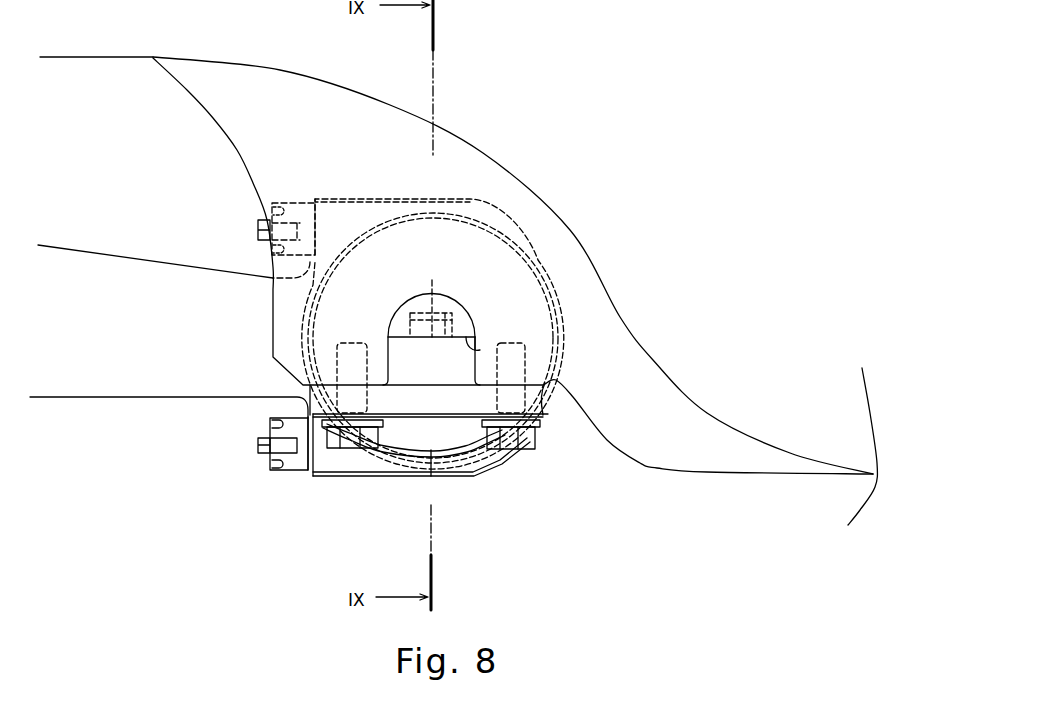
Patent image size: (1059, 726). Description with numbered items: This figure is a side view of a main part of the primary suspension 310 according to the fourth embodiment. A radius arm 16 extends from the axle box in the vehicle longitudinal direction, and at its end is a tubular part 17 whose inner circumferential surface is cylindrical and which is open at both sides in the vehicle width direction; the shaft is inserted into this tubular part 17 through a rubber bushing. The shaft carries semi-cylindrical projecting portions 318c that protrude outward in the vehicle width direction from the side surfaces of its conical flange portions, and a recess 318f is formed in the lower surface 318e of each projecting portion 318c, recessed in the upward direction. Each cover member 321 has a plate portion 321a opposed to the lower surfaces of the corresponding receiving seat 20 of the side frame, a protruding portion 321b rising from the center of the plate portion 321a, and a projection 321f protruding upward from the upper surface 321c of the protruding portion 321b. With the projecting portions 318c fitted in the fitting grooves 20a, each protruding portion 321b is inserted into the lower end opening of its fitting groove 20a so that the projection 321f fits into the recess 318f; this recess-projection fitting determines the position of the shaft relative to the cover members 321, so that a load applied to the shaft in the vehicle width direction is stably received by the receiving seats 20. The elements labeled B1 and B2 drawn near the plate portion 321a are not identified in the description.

The primary suspension 310 is at (683, 152).
The receiving seat 20 is at (213, 118).
The fitting groove 20a is at (413, 308).
The radius arm 16 is at (72, 400).
The tubular part 17 is at (312, 478).
The projecting portion 318c is at (420, 302).
The lower surface 318e is at (463, 325).
The recess 318f is at (432, 313).
The cover member 321 is at (543, 414).
The plate portion 321a is at (377, 402).
The protruding portion 321b is at (448, 367).
The upper surface 321c is at (477, 350).
The projection 321f is at (457, 323).
The bolt B1 is at (527, 452).
The bolt B2 is at (347, 450).